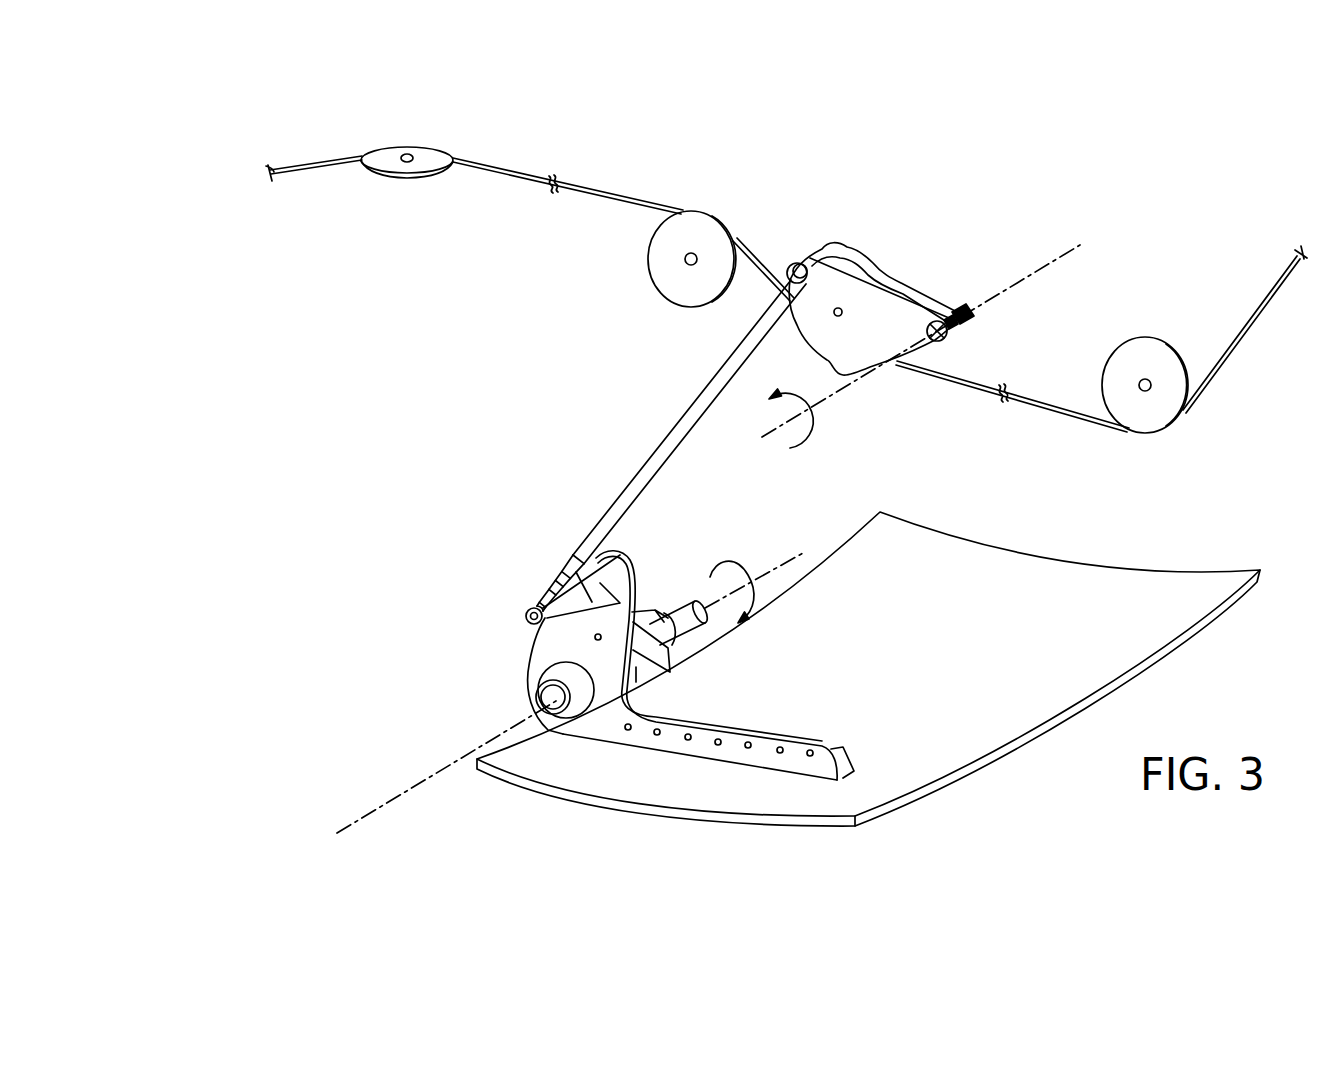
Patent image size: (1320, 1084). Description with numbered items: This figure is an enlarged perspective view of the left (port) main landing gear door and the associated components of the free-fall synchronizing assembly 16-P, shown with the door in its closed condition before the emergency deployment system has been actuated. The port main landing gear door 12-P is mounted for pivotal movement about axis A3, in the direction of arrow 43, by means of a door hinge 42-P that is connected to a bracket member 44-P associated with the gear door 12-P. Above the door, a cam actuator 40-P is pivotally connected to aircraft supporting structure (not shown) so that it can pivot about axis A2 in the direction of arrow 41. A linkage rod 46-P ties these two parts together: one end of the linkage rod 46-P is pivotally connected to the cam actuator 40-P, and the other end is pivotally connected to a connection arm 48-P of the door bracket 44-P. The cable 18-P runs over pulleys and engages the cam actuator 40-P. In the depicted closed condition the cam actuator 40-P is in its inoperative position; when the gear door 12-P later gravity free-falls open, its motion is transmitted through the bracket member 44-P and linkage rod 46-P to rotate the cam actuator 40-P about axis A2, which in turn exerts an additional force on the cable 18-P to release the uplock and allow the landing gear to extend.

The port main landing gear door 12-P is at (946, 656).
The free-fall synchronizing assembly 16-P is at (1036, 191).
The cable 18-P is at (607, 190).
The cam actuator 40-P is at (882, 347).
The arrow 41 is at (809, 438).
The door hinge 42-P is at (684, 613).
The arrow 43 is at (722, 563).
The bracket member 44-P is at (734, 743).
The linkage rod 46-P is at (670, 444).
The connection arm 48-P is at (590, 601).
The axis A2 is at (832, 396).
The axis A3 is at (405, 794).